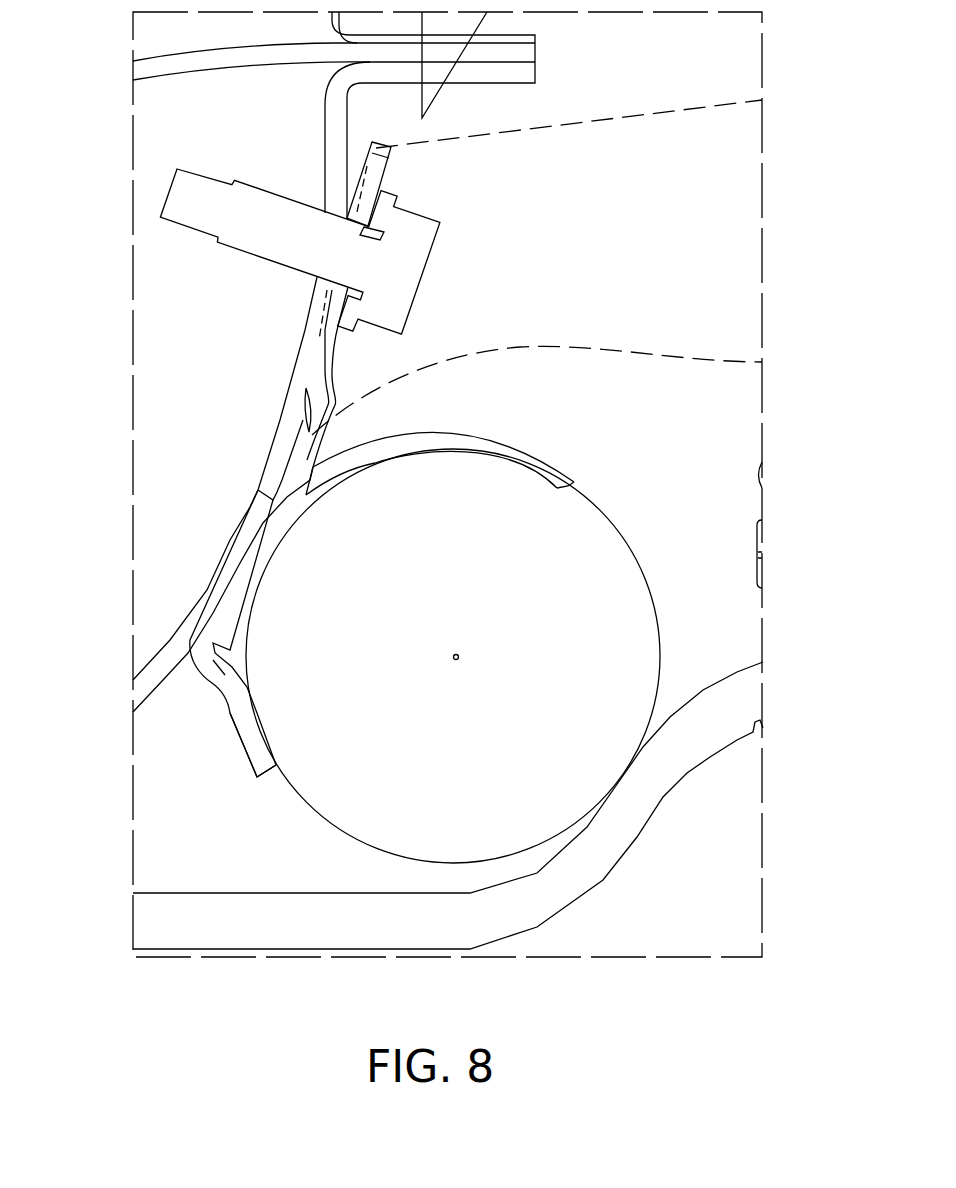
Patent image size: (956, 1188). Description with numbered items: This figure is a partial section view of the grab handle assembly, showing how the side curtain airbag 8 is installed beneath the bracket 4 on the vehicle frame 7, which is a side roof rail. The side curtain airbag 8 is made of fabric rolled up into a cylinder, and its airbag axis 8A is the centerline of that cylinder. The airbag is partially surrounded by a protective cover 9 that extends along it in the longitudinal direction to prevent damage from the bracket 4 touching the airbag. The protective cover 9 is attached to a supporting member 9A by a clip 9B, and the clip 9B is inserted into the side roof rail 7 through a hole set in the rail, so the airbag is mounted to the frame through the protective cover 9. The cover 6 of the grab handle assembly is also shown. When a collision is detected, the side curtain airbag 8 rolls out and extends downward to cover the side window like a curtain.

The bracket 4 is at (723, 363).
The cover 6 is at (275, 935).
The vehicle frame 7 is at (282, 411).
The side curtain airbag 8 is at (410, 668).
The airbag axis 8A is at (459, 657).
The protective cover 9 is at (253, 768).
The supporting member 9A is at (330, 303).
The clip 9B is at (176, 200).